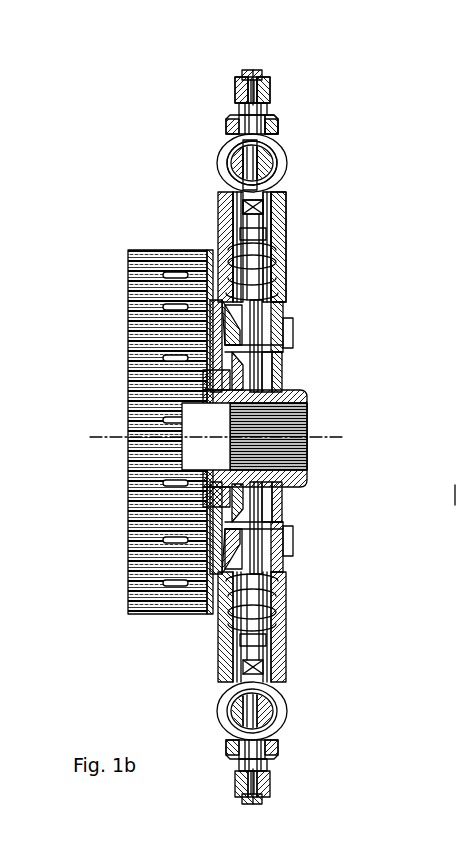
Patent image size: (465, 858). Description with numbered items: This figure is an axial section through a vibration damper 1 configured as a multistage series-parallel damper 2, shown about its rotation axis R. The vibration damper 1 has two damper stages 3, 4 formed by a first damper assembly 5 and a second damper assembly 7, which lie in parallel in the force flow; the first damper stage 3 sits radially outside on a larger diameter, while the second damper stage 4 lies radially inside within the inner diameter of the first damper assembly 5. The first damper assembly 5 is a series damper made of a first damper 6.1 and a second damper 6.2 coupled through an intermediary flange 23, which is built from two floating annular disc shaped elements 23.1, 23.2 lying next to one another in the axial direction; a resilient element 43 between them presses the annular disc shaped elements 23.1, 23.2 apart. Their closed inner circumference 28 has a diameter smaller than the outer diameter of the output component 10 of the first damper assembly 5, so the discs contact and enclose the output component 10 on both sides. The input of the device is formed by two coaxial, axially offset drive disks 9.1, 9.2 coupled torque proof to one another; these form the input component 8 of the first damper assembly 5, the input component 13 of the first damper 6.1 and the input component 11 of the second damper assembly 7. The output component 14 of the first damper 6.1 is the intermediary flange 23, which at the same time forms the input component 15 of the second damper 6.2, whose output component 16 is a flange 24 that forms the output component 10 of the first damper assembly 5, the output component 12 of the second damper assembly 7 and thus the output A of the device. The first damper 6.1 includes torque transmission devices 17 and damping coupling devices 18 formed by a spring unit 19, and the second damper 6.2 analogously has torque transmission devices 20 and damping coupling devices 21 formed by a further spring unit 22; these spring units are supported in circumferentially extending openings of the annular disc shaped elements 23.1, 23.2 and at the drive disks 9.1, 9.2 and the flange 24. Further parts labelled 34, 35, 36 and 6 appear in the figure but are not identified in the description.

The vibration damper 1 is at (137, 332).
The series-parallel damper 2 is at (120, 128).
The first damper stage 3 is at (185, 165).
The first damper assembly 5 is at (232, 163).
The resilient element 43 is at (253, 72).
The annular disc shaped element 23.1 is at (237, 85).
The annular disc shaped element 23.2 is at (265, 86).
The input component of the first damper 13 is at (208, 127).
The input component of the first damper assembly 8 is at (227, 118).
The input component of the second damper assembly 11 is at (275, 117).
The output component of the first damper 14 is at (277, 58).
The input component of the second damper 15 is at (277, 58).
The intermediary flange 23 is at (259, 67).
The torque transmission devices 20 is at (334, 148).
The damping coupling devices 21 is at (334, 148).
The spring unit 22 is at (334, 148).
The torque transmission devices 17 is at (334, 148).
The damping coupling devices 18 is at (334, 148).
The spring unit 19 is at (278, 149).
The first damper 6.1 is at (302, 165).
The second damper 6.2 is at (278, 162).
The inner circumference 28 is at (222, 208).
The drive disk 9.1 is at (230, 223).
The drive disk 9.2 is at (281, 230).
The output component of the first damper assembly 10 is at (319, 208).
The output component of the second damper 16 is at (319, 208).
The flange 24 is at (256, 211).
The second damper assembly 7 is at (312, 247).
The second damper stage 4 is at (284, 265).
The retaining ring 34 is at (308, 337).
The washer 35 is at (308, 337).
The snap ring 36 is at (284, 283).
The output component A is at (280, 433).
The output component of the second damper assembly 12 is at (300, 369).
The rotation axis R is at (328, 438).
The bearing 6 is at (460, 496).